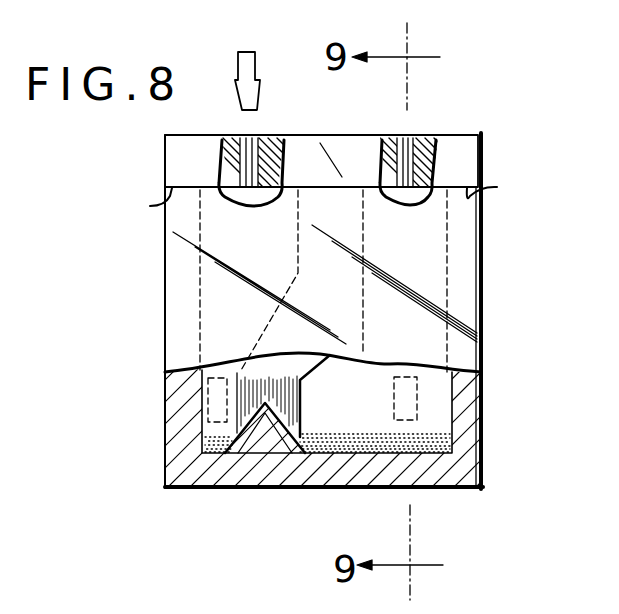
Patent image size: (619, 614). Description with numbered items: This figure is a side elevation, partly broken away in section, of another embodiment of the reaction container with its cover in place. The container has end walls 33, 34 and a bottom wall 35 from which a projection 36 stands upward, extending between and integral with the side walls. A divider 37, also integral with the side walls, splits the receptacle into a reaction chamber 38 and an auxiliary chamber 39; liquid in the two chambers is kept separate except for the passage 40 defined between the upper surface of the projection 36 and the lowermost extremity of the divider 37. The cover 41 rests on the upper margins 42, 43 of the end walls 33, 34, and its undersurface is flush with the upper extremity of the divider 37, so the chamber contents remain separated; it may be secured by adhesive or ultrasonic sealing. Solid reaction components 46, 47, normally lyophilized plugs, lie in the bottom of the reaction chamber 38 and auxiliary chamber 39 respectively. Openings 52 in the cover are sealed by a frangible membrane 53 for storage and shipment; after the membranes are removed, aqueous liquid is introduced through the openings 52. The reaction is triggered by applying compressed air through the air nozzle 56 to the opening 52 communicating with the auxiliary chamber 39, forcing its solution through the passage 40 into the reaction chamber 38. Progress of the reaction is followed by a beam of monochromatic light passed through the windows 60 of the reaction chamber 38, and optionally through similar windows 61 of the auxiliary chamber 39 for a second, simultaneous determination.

The end wall 33 is at (482, 297).
The end wall 34 is at (165, 318).
The bottom wall 35 is at (343, 488).
The projection 36 is at (248, 437).
The divider 37 is at (320, 352).
The reaction chamber 38 is at (425, 290).
The auxiliary chamber 39 is at (226, 283).
The passage 40 is at (300, 400).
The cover 41 is at (476, 142).
The upper margin 42 is at (496, 188).
The upper margin 43 is at (149, 204).
The solid reaction component 46 is at (420, 442).
The solid reaction component 47 is at (215, 441).
The opening 52 is at (254, 153).
The frangible membrane 53 is at (242, 138).
The air nozzle 56 is at (257, 63).
The window 60 is at (418, 389).
The window 61 is at (207, 398).